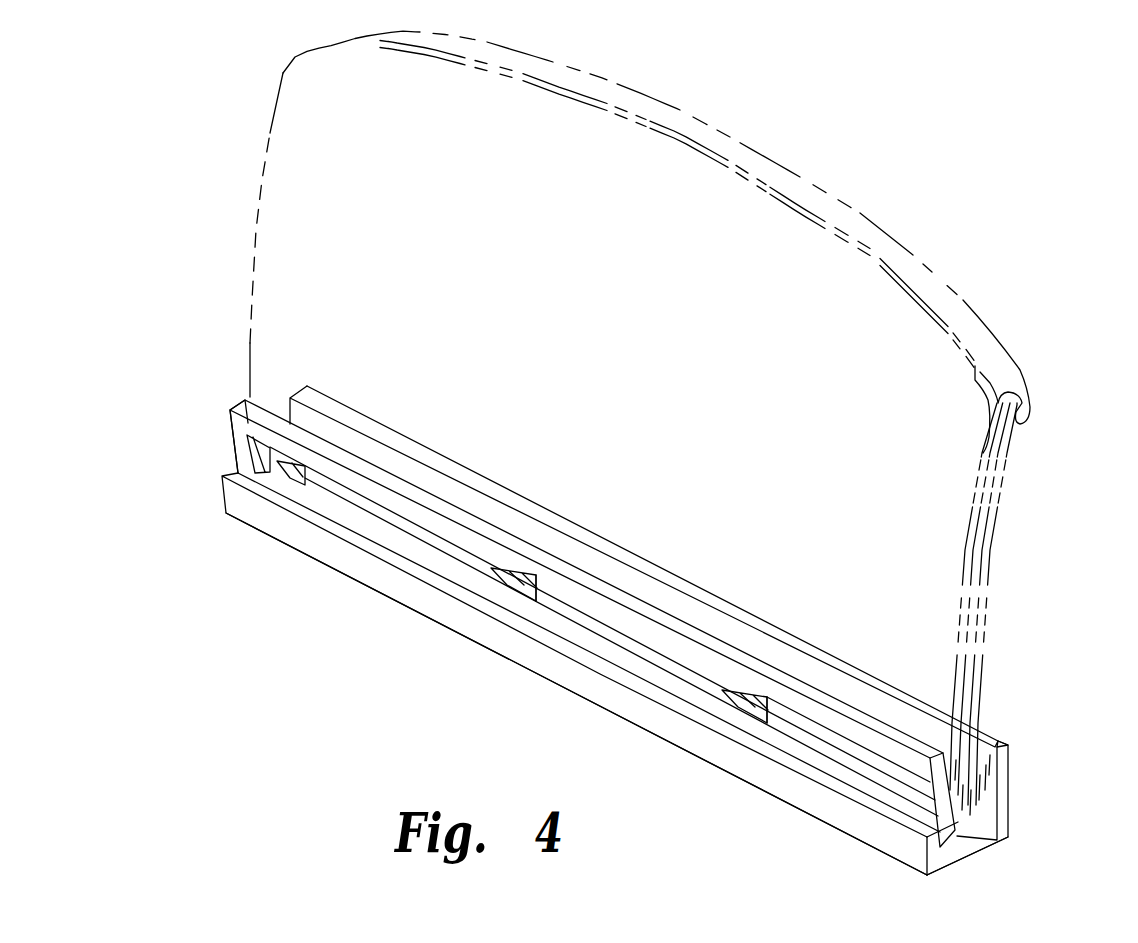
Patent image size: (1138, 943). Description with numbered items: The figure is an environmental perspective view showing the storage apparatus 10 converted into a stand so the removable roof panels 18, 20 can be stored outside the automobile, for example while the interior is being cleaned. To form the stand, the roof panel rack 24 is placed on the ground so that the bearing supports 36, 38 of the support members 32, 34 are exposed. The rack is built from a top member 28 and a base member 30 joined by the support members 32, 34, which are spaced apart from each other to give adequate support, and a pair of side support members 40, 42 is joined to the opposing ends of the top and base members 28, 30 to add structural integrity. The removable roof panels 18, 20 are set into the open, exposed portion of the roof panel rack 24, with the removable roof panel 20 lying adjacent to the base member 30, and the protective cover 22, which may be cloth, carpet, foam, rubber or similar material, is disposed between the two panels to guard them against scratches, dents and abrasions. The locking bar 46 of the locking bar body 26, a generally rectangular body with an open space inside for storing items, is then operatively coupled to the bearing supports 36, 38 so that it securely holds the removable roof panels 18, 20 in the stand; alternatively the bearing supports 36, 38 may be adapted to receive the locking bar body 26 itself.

The storage apparatus 10 is at (137, 338).
The removable roof panel 18 is at (594, 342).
The removable roof panel 20 is at (992, 522).
The protective cover 22 is at (980, 313).
The roof panel rack 24 is at (1050, 780).
The locking bar body 26 is at (214, 443).
The top member 28 is at (864, 828).
The base member 30 is at (993, 740).
The support member 32 is at (768, 712).
The support member 34 is at (536, 594).
The bearing support 36 is at (722, 690).
The bearing support 38 is at (491, 568).
The side support member 40 is at (962, 848).
The side support member 42 is at (285, 460).
The locking bar 46 is at (228, 407).